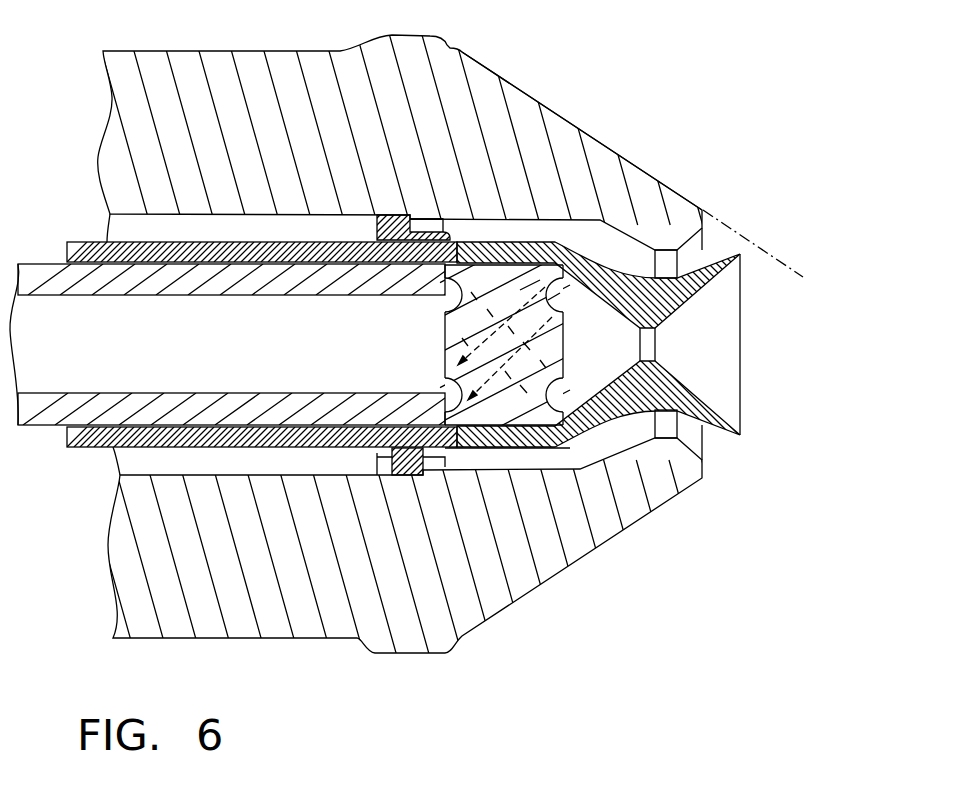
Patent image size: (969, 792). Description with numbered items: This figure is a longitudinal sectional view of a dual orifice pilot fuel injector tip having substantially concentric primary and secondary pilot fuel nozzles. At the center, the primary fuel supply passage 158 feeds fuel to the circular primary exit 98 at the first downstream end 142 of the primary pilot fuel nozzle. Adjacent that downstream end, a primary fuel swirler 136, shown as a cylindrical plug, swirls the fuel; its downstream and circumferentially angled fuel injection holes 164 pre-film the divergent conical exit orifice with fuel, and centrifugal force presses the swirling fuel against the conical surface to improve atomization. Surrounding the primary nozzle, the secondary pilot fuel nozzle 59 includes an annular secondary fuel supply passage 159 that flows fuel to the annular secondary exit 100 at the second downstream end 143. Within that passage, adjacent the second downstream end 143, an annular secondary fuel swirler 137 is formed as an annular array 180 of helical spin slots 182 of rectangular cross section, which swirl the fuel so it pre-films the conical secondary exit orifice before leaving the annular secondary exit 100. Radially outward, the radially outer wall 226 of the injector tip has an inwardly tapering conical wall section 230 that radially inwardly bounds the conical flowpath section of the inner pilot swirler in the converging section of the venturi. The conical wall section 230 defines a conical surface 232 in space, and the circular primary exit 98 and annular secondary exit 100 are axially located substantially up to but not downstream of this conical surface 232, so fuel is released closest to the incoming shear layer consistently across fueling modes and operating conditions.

The radially outer wall 226 is at (265, 51).
The inwardly tapering conical wall section 230 is at (515, 83).
The annular array 180 is at (432, 217).
The helical spin slots 182 is at (443, 227).
The conical surface 232 is at (725, 224).
The annular secondary exit 100 is at (704, 243).
The circular primary exit 98 is at (741, 360).
The first downstream end 142 is at (658, 353).
The second downstream end 143 is at (673, 418).
The secondary pilot fuel nozzle 59 is at (567, 458).
The annular secondary fuel swirler 137 is at (569, 459).
The annular secondary fuel supply passage 159 is at (204, 239).
The primary fuel supply passage 158 is at (262, 359).
The fuel injection holes 164 is at (547, 402).
The primary fuel swirler 136 is at (563, 334).